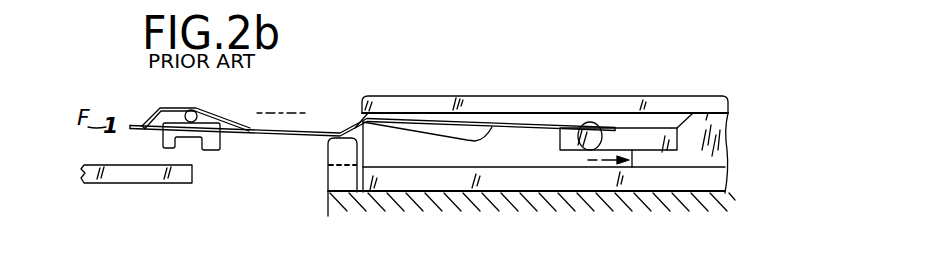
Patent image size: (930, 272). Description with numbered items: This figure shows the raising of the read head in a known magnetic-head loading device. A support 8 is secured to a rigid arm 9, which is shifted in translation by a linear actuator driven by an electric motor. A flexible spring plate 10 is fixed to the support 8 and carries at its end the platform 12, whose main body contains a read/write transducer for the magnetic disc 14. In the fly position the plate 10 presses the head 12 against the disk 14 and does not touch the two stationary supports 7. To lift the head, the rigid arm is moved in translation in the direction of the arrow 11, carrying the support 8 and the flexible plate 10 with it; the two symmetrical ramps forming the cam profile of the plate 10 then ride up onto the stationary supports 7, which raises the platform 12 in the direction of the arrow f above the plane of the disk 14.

The stationary support 7 is at (340, 143).
The support 8 is at (575, 124).
The rigid arm 9 is at (697, 133).
The flexible spring plate 10 is at (427, 118).
The direction of movement arrow 11 is at (607, 165).
The platform 12 is at (218, 96).
The magnetic disc 14 is at (192, 173).